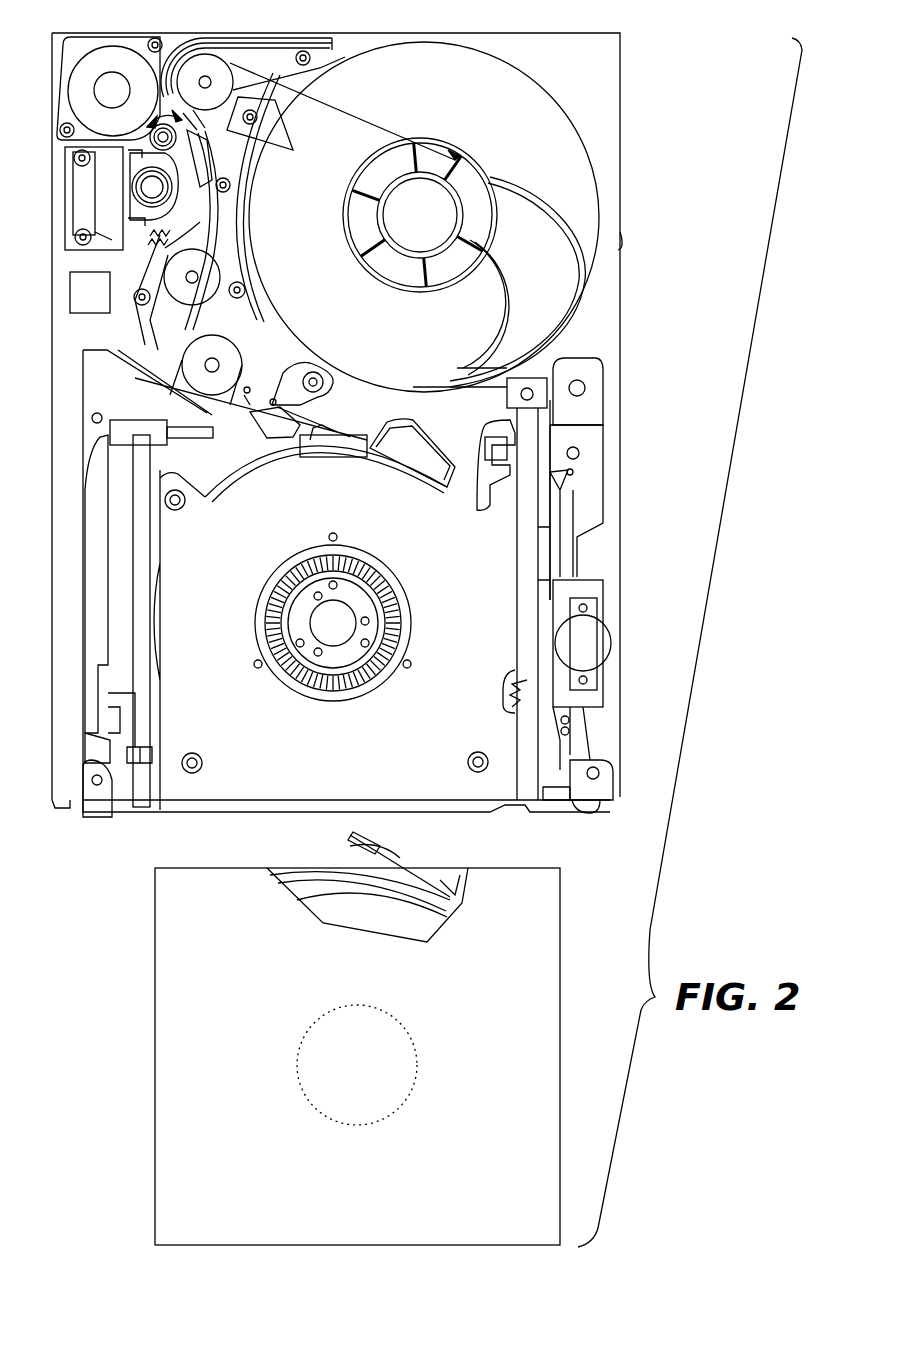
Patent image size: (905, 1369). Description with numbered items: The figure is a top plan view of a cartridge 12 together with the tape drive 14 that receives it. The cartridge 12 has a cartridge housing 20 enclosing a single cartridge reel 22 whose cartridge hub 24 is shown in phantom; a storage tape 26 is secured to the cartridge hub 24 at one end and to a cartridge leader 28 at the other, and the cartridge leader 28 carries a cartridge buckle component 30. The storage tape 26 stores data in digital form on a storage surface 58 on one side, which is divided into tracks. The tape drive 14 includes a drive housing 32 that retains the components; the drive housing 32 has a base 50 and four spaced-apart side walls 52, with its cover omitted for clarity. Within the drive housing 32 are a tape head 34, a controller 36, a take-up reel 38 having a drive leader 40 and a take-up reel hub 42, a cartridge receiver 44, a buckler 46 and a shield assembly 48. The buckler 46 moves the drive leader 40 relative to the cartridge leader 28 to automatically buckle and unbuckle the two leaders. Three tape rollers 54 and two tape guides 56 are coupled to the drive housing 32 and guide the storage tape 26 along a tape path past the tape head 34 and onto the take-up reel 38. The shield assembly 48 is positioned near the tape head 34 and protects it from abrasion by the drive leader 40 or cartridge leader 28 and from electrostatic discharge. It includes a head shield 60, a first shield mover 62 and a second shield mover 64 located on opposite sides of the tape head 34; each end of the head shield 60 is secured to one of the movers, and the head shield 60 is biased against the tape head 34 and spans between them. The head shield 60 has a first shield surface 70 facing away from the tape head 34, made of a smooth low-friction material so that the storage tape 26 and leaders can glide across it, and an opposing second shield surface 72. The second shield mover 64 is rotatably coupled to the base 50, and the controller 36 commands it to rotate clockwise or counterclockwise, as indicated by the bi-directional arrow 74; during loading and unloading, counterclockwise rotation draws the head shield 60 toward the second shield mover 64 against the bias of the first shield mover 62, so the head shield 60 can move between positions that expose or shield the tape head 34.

The cartridge 12 is at (540, 922).
The tape drive 14 is at (629, 365).
The cartridge housing 20 is at (563, 987).
The cartridge reel 22 is at (325, 920).
The cartridge hub 24 is at (415, 1060).
The storage tape 26 is at (465, 880).
The cartridge leader 28 is at (395, 856).
The cartridge buckle component 30 is at (372, 838).
The drive housing 32 is at (628, 620).
The tape head 34 is at (130, 178).
The controller 36 is at (76, 300).
The take-up reel 38 is at (555, 125).
The drive leader 40 is at (240, 415).
The take-up reel hub 42 is at (452, 165).
The cartridge receiver 44 is at (512, 787).
The buckler 46 is at (318, 377).
The shield assembly 48 is at (143, 233).
The base 50 is at (606, 62).
The side walls 52 is at (622, 246).
The tape rollers 54 is at (214, 345).
The tape guides 56 is at (135, 378).
The storage surface 58 is at (380, 858).
The head shield 60 is at (207, 222).
The first shield mover 62 is at (160, 258).
The second shield mover 64 is at (157, 130).
The first shield surface 70 is at (183, 137).
The second shield surface 72 is at (123, 155).
The bi-directional arrow 74 is at (160, 107).